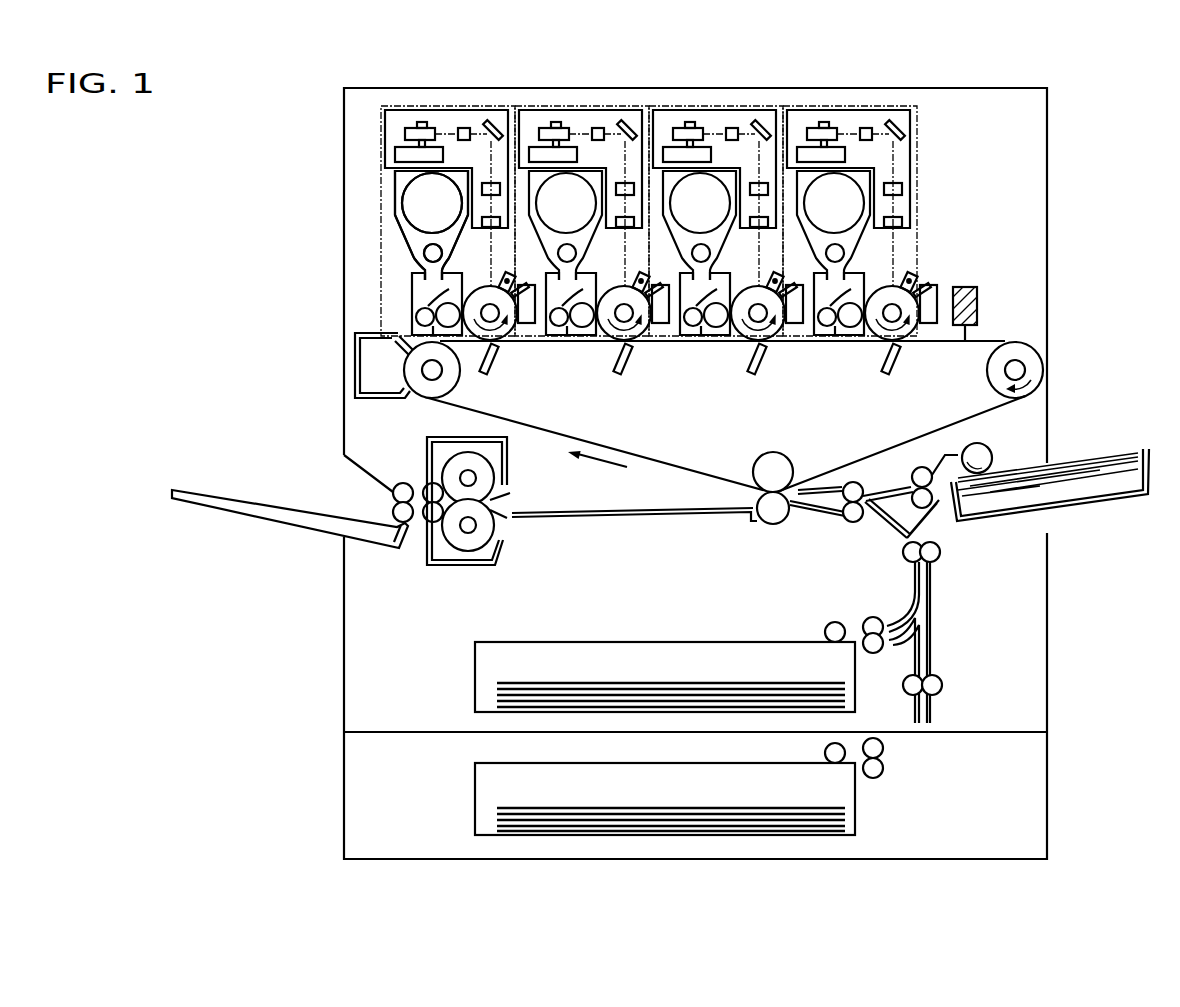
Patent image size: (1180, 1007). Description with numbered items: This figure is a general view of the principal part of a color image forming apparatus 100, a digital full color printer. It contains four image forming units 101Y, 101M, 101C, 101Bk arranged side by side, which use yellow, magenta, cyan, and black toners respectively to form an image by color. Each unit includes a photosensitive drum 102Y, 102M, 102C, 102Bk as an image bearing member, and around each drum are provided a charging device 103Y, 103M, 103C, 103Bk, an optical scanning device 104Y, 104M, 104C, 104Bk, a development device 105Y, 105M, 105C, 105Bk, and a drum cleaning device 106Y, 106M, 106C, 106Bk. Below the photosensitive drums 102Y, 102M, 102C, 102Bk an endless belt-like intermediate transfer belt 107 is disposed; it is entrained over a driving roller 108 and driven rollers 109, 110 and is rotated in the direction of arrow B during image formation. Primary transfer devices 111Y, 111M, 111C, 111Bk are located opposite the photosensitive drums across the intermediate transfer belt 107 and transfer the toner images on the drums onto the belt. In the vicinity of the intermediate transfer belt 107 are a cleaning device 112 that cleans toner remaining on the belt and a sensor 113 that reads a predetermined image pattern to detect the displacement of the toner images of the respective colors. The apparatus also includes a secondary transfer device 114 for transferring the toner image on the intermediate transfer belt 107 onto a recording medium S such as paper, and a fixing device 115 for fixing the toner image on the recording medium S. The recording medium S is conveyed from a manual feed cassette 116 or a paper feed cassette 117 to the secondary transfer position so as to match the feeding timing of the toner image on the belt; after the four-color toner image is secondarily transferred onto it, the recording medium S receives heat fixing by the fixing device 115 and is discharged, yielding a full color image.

The image forming apparatus 100 is at (982, 84).
The image forming unit 101Y is at (450, 231).
The image forming unit 101M is at (606, 228).
The image forming unit 101C is at (749, 232).
The image forming unit 101Bk is at (896, 221).
The photosensitive drum 102Y is at (466, 324).
The photosensitive drum 102M is at (634, 344).
The photosensitive drum 102C is at (768, 347).
The photosensitive drum 102Bk is at (907, 347).
The charging device 103Y is at (518, 264).
The charging device 103M is at (652, 264).
The charging device 103C is at (786, 264).
The charging device 103Bk is at (915, 272).
The optical scanning device 104Y is at (468, 110).
The optical scanning device 104M is at (604, 110).
The optical scanning device 104C is at (738, 110).
The optical scanning device 104Bk is at (872, 110).
The development device 105Y is at (413, 292).
The development device 105M is at (584, 334).
The development device 105C is at (718, 334).
The development device 105Bk is at (850, 337).
The drum cleaning device 106Y is at (528, 325).
The drum cleaning device 106M is at (660, 326).
The drum cleaning device 106C is at (795, 326).
The drum cleaning device 106Bk is at (937, 327).
The intermediate transfer belt 107 is at (713, 484).
The driving roller 108 is at (1035, 352).
The driven roller 109 is at (424, 330).
The driven roller 110 is at (760, 470).
The primary transfer device 111Y is at (488, 376).
The primary transfer device 111M is at (622, 376).
The primary transfer device 111C is at (756, 376).
The primary transfer device 111Bk is at (892, 373).
The cleaning device 112 is at (355, 374).
The sensor 113 is at (980, 306).
The secondary transfer device 114 is at (775, 524).
The fixing device 115 is at (463, 566).
The manual feed cassette 116 is at (1098, 502).
The paper feed cassette 117 is at (473, 672).
The belt rotation direction B is at (597, 470).
The recording medium S is at (1100, 470).